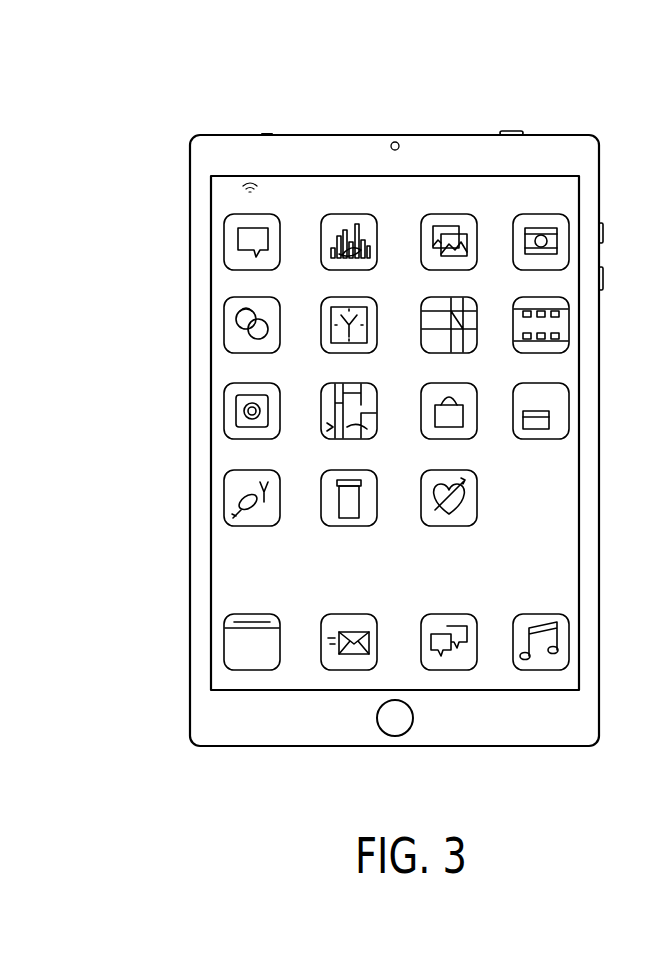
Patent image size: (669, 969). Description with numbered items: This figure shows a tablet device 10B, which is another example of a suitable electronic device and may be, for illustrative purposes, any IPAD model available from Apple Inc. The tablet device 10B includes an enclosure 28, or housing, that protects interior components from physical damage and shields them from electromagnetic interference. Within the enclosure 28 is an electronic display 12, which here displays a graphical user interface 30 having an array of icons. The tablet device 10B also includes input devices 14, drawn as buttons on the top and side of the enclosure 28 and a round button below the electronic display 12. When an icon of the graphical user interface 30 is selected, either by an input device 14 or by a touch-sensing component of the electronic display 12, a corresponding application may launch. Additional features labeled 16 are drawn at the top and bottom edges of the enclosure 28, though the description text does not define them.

The tablet device 10B is at (200, 95).
The electronic display 12 is at (579, 436).
The input devices 14 is at (510, 132).
The input/output ports 16 is at (266, 135).
The enclosure 28 is at (600, 384).
The graphical user interface 30 is at (556, 513).